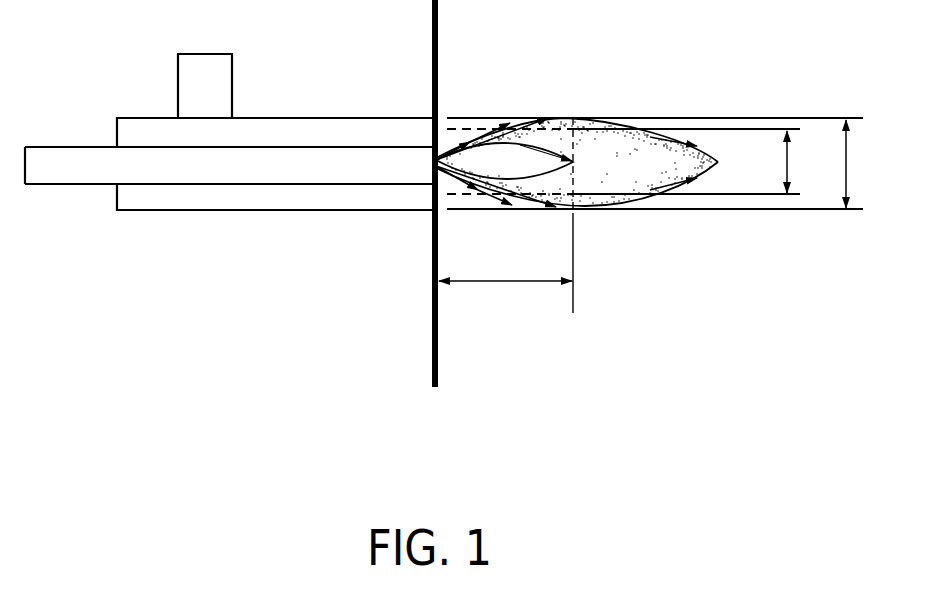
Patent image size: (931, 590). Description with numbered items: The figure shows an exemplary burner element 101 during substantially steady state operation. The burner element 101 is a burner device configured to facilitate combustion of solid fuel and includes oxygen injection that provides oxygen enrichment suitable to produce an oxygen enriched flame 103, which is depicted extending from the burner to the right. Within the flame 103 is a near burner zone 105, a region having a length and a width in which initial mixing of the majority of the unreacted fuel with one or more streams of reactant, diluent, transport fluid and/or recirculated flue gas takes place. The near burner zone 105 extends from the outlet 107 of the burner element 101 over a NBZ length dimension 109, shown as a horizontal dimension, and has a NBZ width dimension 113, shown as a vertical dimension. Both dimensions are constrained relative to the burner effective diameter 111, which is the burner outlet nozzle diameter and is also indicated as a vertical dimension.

The burner element 101 is at (197, 160).
The oxygen enriched flame 103 is at (615, 168).
The near burner zone 105 is at (547, 119).
The outlet 107 is at (478, 130).
The NBZ length dimension 109 is at (498, 281).
The burner effective diameter 111 is at (846, 165).
The NBZ width dimension 113 is at (787, 167).